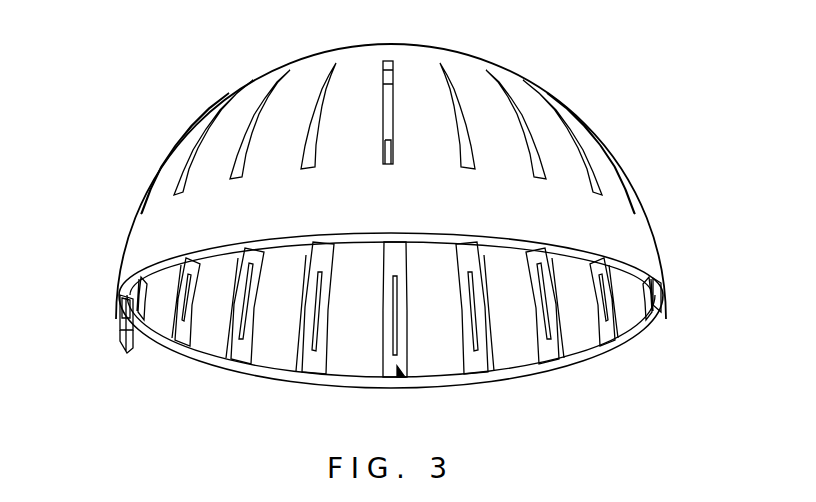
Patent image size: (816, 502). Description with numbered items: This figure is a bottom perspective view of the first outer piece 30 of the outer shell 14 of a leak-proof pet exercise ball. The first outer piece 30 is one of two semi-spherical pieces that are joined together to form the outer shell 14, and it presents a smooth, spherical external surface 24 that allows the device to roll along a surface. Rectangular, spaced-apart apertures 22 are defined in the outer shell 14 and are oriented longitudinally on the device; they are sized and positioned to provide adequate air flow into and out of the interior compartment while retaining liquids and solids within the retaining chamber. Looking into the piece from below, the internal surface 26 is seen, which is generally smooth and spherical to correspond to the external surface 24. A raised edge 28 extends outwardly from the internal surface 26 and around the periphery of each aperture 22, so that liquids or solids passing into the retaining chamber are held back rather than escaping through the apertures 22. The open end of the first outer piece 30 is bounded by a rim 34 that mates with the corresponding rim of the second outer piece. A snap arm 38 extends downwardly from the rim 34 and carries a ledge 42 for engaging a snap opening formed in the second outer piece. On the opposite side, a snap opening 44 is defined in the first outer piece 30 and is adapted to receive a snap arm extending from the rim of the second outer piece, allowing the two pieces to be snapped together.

The outer shell 14 is at (468, 54).
The apertures 22 is at (325, 107).
The external surface 24 is at (548, 122).
The internal surface 26 is at (344, 342).
The raised edge 28 is at (402, 374).
The first outer piece 30 is at (141, 240).
The rim 34 is at (637, 277).
The snap arm 38 is at (127, 358).
The ledge 42 is at (121, 318).
The snap opening 44 is at (657, 284).